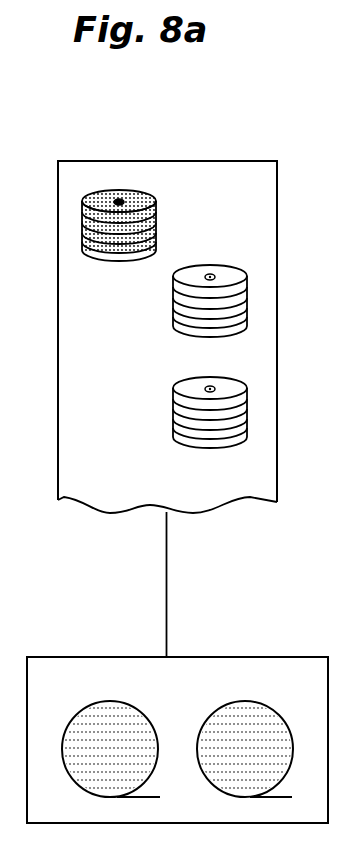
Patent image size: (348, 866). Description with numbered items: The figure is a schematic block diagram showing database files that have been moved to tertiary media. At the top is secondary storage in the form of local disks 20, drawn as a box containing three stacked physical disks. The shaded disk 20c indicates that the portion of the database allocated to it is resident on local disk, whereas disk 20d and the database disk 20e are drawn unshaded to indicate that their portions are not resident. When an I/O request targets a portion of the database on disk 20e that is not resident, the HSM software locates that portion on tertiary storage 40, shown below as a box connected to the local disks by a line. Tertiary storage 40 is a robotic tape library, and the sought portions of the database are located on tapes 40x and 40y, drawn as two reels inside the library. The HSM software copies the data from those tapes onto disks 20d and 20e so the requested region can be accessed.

The local disks 20 is at (106, 157).
The physical disk 20c is at (168, 217).
The physical disk 20d is at (171, 311).
The database disk 20e is at (169, 420).
The tertiary storage 40 is at (113, 657).
The tape 40x is at (76, 716).
The tape 40y is at (210, 709).